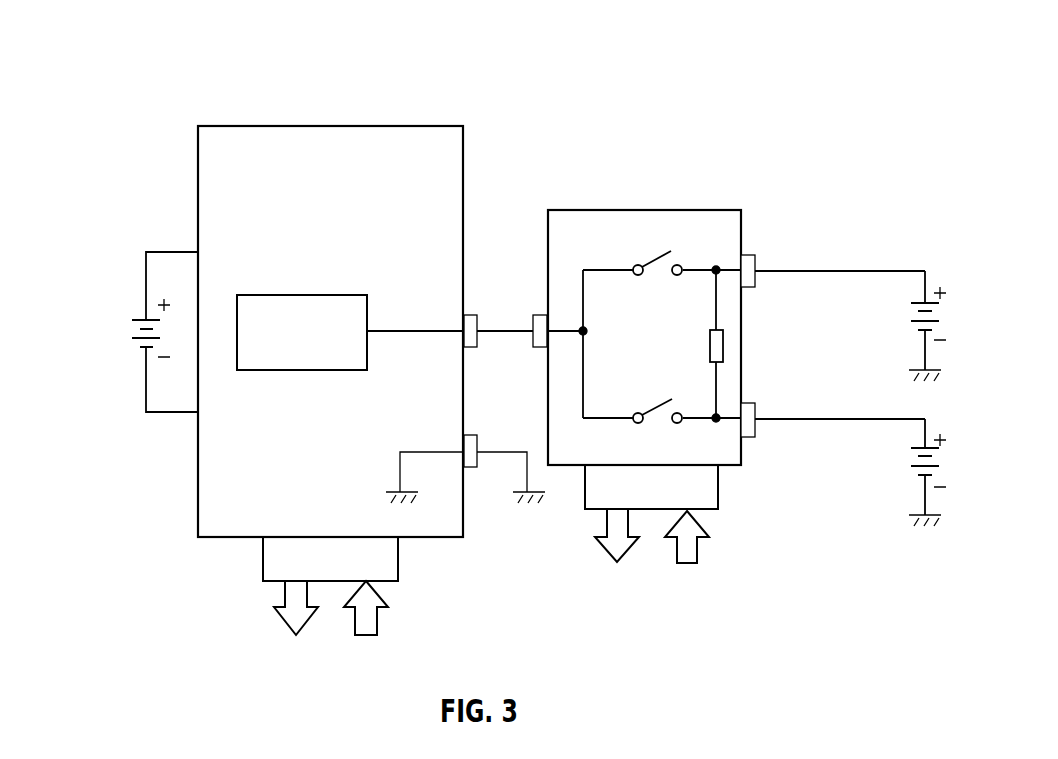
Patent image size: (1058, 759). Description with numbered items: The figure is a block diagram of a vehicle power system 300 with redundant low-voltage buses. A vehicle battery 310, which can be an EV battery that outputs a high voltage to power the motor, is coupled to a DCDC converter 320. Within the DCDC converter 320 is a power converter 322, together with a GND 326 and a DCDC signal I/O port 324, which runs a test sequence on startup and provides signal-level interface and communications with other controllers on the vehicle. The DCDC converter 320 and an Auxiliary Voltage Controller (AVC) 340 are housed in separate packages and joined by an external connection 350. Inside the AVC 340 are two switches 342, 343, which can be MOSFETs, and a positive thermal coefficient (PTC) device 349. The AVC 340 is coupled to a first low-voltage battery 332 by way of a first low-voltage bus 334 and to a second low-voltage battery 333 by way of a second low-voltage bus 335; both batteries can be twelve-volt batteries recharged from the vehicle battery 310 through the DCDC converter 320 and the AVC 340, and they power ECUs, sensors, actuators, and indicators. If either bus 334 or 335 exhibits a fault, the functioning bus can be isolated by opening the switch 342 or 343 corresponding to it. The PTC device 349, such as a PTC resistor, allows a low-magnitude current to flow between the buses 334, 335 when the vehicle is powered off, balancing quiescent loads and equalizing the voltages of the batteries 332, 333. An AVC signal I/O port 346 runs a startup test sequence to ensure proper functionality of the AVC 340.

The vehicle power system 300 is at (201, 51).
The vehicle battery 310 is at (146, 320).
The DCDC converter 320 is at (258, 126).
The power converter 322 is at (300, 295).
The DCDC signal I/O port 324 is at (262, 558).
The GND 326 is at (474, 435).
The first low-voltage battery 332 is at (931, 300).
The second low-voltage battery 333 is at (912, 470).
The first low-voltage bus 334 is at (838, 273).
The second low-voltage bus 335 is at (832, 418).
The Auxiliary Voltage Controller (AVC) 340 is at (680, 210).
The switch 342 is at (668, 250).
The switch 343 is at (672, 399).
The AVC signal I/O port 346 is at (720, 487).
The positive thermal coefficient (PTC) device 349 is at (710, 336).
The external connection 350 is at (478, 330).